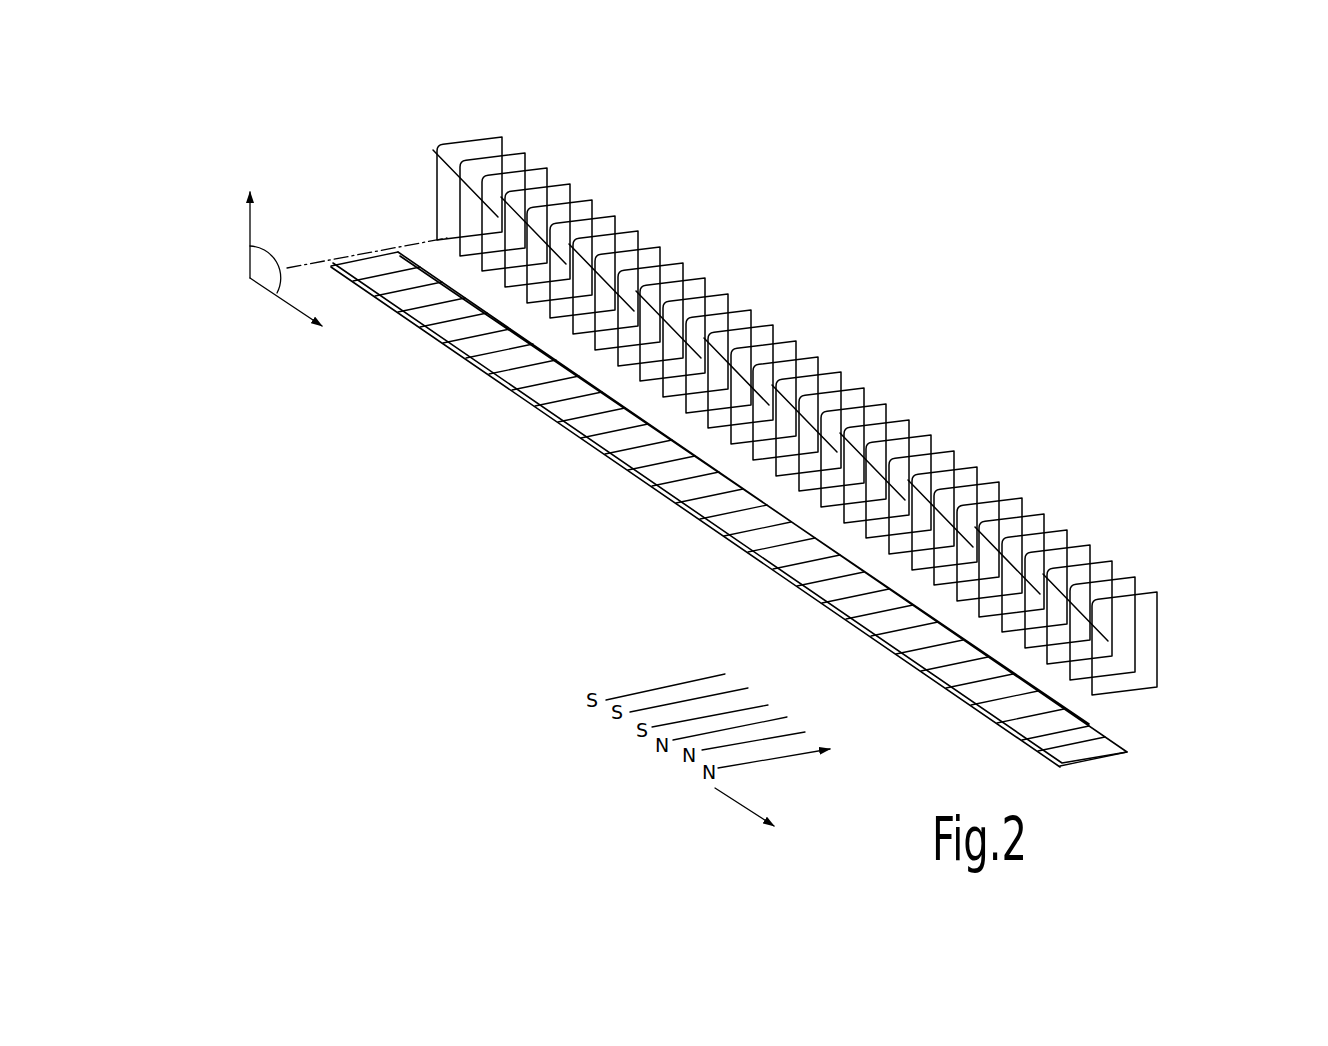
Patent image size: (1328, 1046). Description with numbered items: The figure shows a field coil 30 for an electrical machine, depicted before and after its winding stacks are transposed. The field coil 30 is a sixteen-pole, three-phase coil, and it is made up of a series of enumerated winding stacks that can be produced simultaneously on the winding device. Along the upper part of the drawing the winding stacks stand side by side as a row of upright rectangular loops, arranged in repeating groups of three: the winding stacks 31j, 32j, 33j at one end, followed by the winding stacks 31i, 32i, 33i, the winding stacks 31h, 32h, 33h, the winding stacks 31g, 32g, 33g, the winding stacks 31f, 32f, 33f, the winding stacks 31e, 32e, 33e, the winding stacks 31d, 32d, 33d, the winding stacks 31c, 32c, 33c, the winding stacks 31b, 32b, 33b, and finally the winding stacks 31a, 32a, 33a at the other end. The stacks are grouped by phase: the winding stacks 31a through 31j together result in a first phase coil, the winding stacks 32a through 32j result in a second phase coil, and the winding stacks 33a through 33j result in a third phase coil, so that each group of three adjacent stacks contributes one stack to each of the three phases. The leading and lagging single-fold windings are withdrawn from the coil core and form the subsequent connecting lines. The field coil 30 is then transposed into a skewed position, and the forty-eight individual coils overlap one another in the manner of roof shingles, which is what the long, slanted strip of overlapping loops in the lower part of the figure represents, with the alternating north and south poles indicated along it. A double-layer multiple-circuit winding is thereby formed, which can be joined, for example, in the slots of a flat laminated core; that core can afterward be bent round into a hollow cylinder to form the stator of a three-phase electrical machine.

The field coil 30 is at (483, 368).
The winding stack 31a is at (1157, 592).
The winding stack 32a is at (1135, 577).
The winding stack 33a is at (1112, 561).
The winding stack 31b is at (1090, 545).
The winding stack 32b is at (1067, 530).
The winding stack 33b is at (1044, 514).
The winding stack 31c is at (1022, 498).
The winding stack 32c is at (999, 482).
The winding stack 33c is at (977, 467).
The winding stack 31d is at (954, 451).
The winding stack 32d is at (931, 435).
The winding stack 33d is at (909, 420).
The winding stack 31e is at (886, 404).
The winding stack 32e is at (864, 388).
The winding stack 33e is at (841, 372).
The winding stack 31f is at (818, 357).
The winding stack 32f is at (796, 341).
The winding stack 33f is at (773, 325).
The winding stack 31g is at (751, 310).
The winding stack 32g is at (728, 294).
The winding stack 33g is at (705, 278).
The winding stack 31h is at (683, 263).
The winding stack 32h is at (660, 247).
The winding stack 33h is at (638, 231).
The winding stack 31i is at (615, 216).
The winding stack 32i is at (592, 200).
The winding stack 33i is at (570, 184).
The winding stack 31j is at (547, 168).
The winding stack 32j is at (525, 153).
The winding stack 33j is at (502, 137).